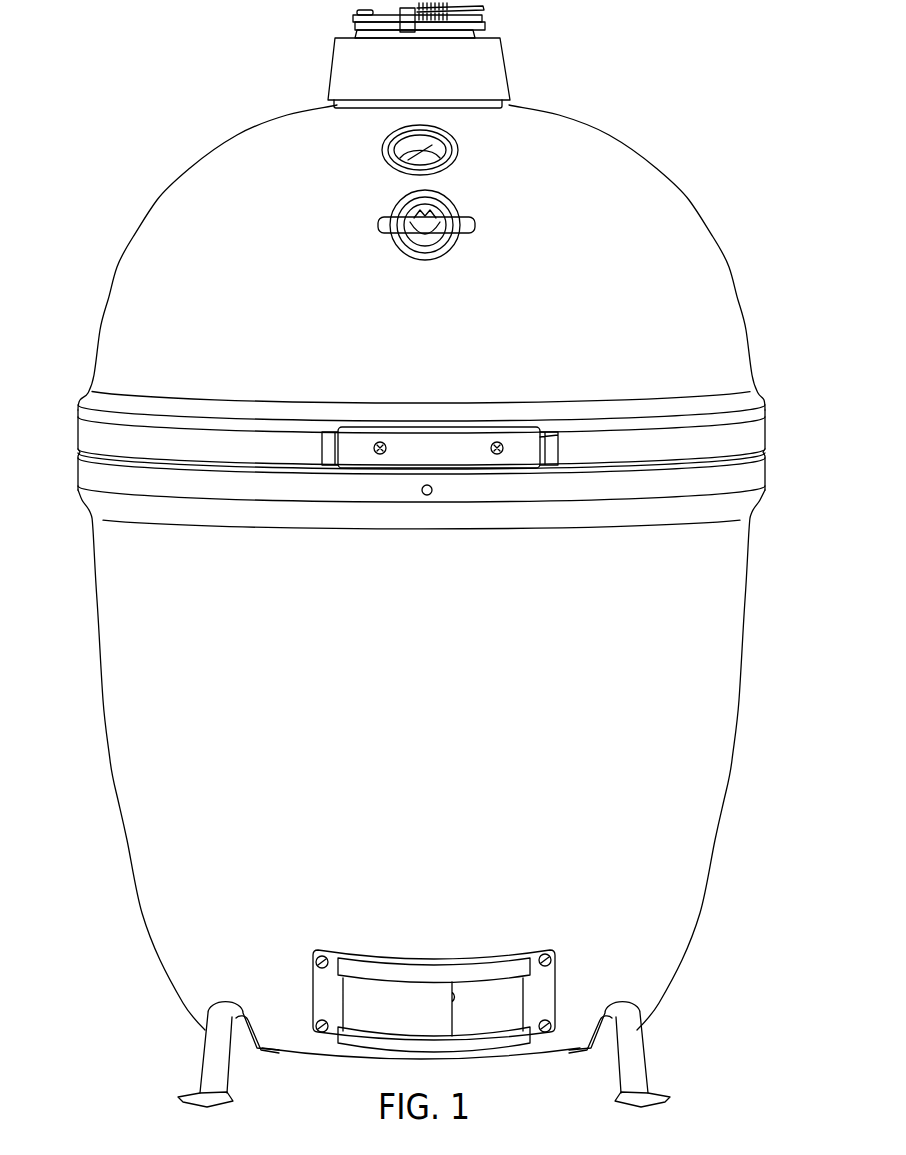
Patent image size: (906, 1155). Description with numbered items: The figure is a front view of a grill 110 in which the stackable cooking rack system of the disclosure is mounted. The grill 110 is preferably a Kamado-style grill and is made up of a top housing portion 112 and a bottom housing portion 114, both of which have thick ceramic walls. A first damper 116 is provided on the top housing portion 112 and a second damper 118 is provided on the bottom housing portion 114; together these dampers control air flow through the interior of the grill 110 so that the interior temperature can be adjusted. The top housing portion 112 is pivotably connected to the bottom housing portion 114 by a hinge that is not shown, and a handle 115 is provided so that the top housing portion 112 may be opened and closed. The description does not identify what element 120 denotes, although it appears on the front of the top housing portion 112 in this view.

The grill 110 is at (408, 555).
The top housing portion 112 is at (117, 277).
The bottom housing portion 114 is at (142, 913).
The handle 115 is at (382, 470).
The first damper 116 is at (292, 58).
The second damper 118 is at (580, 963).
The temperature gauge 120 is at (478, 156).